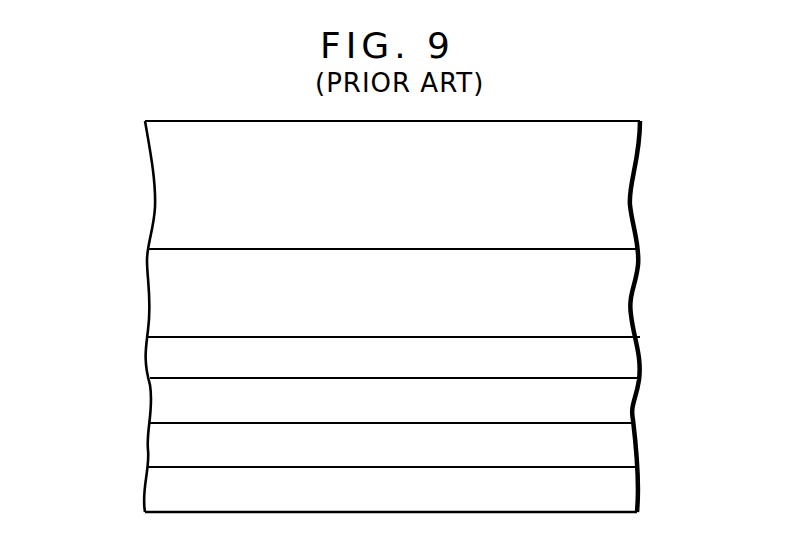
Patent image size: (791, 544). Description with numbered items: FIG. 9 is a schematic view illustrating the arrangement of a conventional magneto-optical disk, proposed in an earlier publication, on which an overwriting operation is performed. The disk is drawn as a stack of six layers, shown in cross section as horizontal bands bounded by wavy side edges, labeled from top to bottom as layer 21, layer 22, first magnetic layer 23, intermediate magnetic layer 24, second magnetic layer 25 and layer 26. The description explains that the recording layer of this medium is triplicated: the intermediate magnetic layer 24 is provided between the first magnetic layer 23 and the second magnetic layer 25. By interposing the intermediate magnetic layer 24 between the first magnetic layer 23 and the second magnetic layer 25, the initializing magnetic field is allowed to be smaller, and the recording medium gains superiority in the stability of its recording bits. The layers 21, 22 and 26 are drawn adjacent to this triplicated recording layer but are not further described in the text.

The first layer (top layer) 21 is at (615, 207).
The second layer 22 is at (607, 298).
The first magnetic layer 23 is at (613, 362).
The intermediate magnetic layer 24 is at (608, 405).
The second magnetic layer 25 is at (615, 442).
The sixth layer (substrate) 26 is at (608, 490).